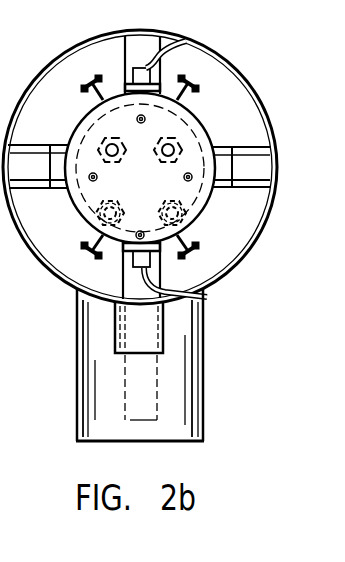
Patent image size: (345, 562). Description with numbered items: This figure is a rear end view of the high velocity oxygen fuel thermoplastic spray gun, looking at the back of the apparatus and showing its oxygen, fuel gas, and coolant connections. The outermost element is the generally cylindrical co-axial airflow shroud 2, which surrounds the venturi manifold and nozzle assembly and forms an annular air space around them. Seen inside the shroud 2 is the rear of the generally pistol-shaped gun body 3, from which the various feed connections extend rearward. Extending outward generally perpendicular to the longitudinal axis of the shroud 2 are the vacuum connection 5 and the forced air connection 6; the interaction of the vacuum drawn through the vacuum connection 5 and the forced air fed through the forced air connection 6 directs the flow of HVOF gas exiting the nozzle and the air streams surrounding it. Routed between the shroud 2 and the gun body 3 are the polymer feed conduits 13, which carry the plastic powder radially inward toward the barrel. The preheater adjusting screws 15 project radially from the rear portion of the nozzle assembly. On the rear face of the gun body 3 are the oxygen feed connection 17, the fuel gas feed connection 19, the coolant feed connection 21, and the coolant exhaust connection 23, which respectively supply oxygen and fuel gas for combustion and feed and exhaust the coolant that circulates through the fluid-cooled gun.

The co-axial airflow shroud 2 is at (249, 84).
The gun body 3 is at (193, 196).
The vacuum connection 5 is at (191, 379).
The forced air connection 6 is at (148, 335).
The polymer feed conduits 13 is at (160, 76).
The preheater adjusting screws 15 is at (184, 97).
The oxygen feed connection 17 is at (174, 147).
The fuel gas feed connection 19 is at (108, 147).
The coolant feed connection 21 is at (103, 212).
The coolant exhaust connection 23 is at (180, 216).